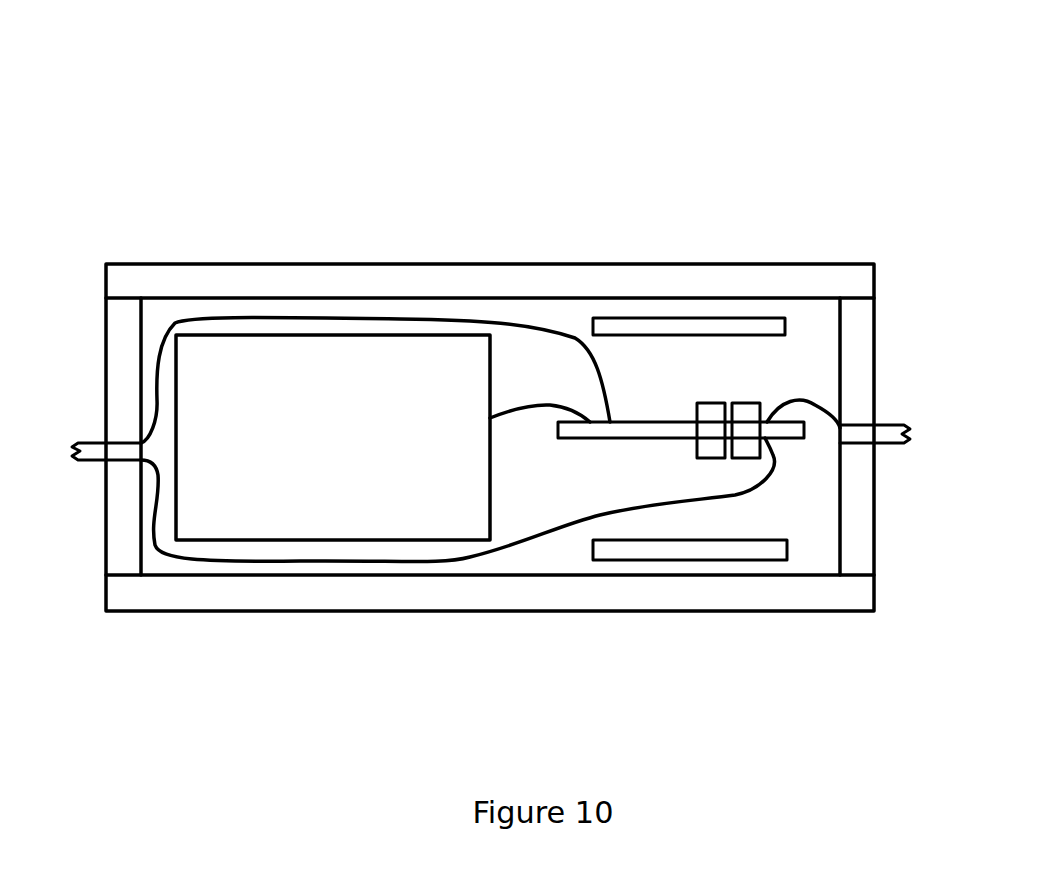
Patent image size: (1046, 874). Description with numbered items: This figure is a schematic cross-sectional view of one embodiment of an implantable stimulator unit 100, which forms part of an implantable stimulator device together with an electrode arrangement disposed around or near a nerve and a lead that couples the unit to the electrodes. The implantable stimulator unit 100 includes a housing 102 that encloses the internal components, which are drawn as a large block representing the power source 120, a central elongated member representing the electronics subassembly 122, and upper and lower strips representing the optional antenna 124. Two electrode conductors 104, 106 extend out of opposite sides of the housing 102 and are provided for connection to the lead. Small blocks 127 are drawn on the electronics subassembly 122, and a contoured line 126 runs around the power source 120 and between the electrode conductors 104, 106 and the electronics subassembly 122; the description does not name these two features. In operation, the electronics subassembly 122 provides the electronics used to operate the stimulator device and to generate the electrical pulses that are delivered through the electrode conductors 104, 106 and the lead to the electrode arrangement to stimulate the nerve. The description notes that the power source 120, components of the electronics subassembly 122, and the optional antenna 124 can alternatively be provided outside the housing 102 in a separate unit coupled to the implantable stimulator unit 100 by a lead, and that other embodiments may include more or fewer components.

The implantable stimulator unit 100 is at (524, 165).
The housing 102 is at (393, 611).
The electrode conductor 104 is at (880, 425).
The electrode conductor 106 is at (93, 443).
The power source 120 is at (290, 335).
The electronics subassembly 122 is at (645, 422).
The antenna 124 is at (700, 560).
The wire / encapsulant 126 is at (467, 560).
The clamp blocks 127 is at (795, 403).